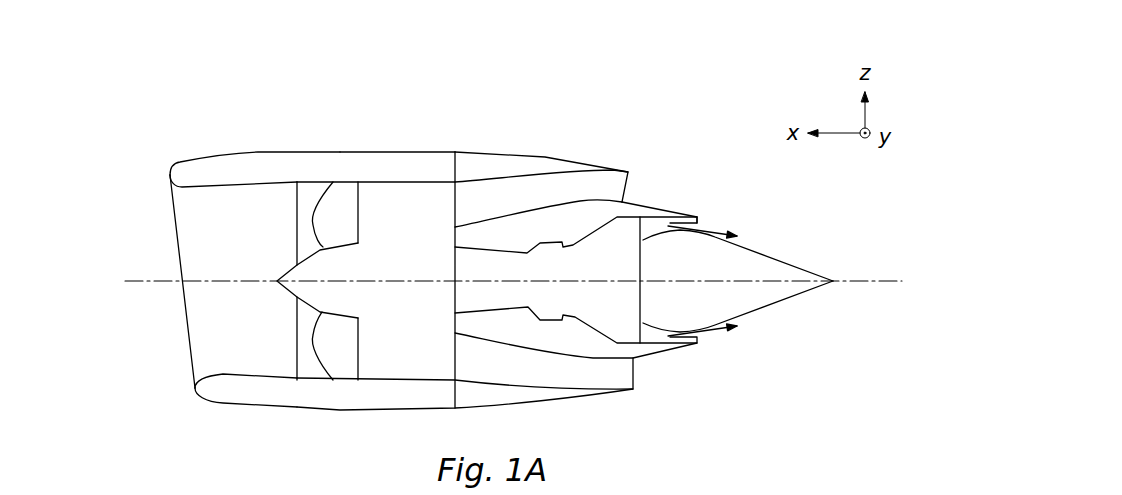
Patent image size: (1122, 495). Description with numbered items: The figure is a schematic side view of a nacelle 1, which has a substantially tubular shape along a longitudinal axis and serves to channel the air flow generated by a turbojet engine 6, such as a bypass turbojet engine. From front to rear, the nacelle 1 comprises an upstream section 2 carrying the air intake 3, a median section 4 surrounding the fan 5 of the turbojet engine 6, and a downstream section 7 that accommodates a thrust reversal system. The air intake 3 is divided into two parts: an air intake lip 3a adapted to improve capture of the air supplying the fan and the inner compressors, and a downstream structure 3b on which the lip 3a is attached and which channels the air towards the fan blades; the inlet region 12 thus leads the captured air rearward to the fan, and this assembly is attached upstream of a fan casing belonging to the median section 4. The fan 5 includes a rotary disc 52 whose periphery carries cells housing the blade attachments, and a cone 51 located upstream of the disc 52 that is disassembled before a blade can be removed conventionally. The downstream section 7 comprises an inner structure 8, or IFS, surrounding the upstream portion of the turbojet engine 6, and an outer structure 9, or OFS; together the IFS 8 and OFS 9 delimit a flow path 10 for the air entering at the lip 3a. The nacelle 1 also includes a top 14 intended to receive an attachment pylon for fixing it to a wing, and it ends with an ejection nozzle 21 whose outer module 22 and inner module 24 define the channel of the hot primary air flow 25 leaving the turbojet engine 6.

The nacelle 1 is at (642, 148).
The upstream section 2 is at (364, 272).
The air intake 3 is at (190, 175).
The air intake lip 3a is at (190, 391).
The downstream structure 3b is at (243, 387).
The median section 4 is at (422, 168).
The fan 5 is at (284, 302).
The cone 51 is at (342, 295).
The rotary disc 52 is at (284, 290).
The turbojet engine 6 is at (618, 240).
The downstream section 7 is at (547, 153).
The inner structure 8 is at (607, 198).
The outer structure 9 is at (565, 162).
The flow path 10 is at (470, 200).
The air inlet 12 is at (223, 238).
The top 14 is at (433, 152).
The ejection nozzle 21 is at (760, 289).
The outer module 22 is at (680, 213).
The inner module 24 is at (783, 303).
The primary air flow 25 is at (707, 223).